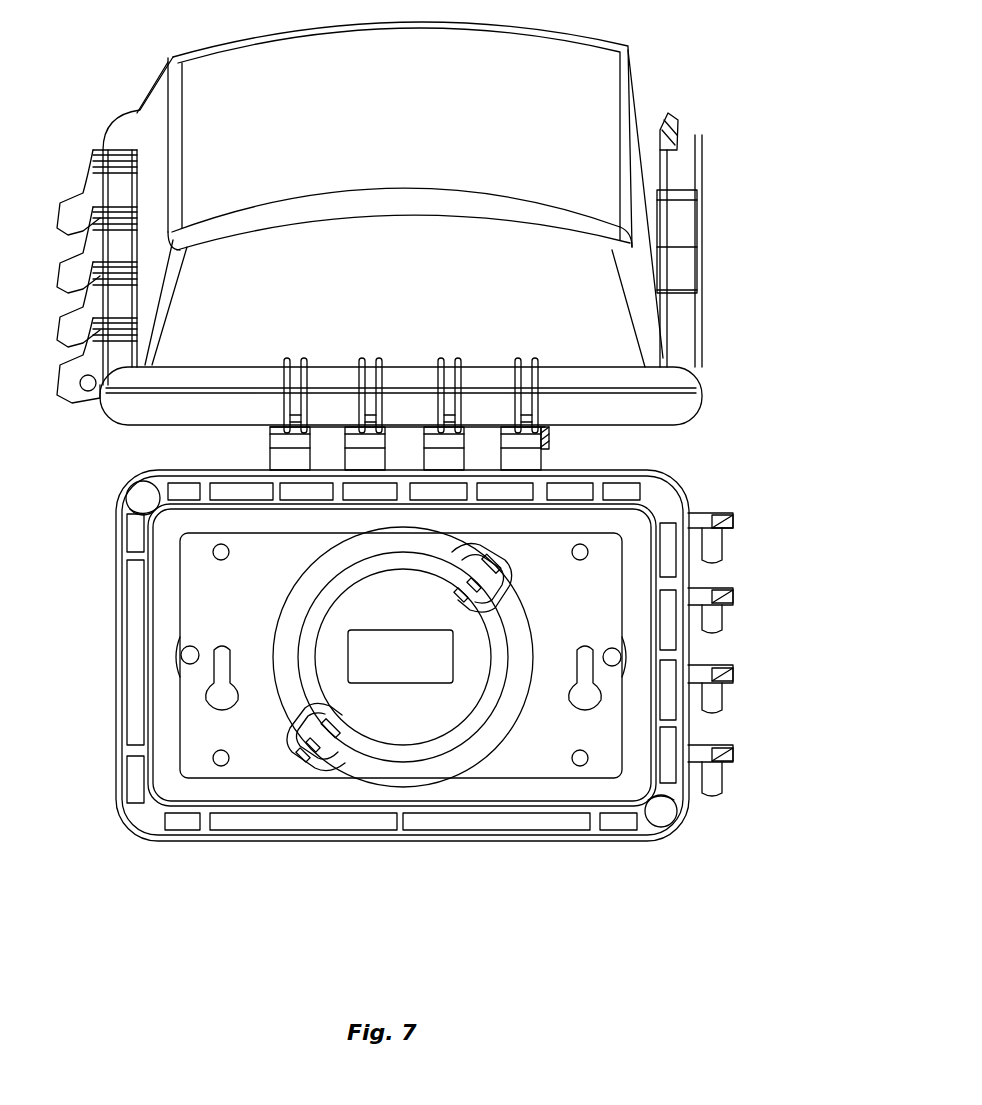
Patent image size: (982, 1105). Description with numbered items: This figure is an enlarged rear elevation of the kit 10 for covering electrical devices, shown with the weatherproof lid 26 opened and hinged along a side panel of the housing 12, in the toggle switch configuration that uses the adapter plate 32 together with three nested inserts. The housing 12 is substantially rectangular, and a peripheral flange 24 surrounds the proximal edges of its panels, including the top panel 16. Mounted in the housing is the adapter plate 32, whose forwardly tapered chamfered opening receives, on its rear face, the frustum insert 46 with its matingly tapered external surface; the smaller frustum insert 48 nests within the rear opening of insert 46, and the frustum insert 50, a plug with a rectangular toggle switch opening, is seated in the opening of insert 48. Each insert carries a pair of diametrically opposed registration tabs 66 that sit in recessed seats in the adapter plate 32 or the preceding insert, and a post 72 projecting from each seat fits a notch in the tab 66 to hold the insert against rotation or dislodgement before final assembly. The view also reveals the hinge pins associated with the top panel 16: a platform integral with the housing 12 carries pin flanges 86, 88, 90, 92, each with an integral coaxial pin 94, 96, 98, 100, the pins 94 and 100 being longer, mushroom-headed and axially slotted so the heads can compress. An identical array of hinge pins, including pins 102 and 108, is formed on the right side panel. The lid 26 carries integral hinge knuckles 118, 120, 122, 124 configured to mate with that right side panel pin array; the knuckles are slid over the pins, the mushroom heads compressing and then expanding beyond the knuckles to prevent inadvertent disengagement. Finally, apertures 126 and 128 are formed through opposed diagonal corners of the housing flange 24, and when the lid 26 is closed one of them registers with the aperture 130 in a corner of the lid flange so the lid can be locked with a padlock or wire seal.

The kit 10 is at (758, 364).
The housing 12 is at (171, 840).
The top panel 16 is at (653, 603).
The peripheral flange 24 is at (115, 658).
The weatherproof lid 26 is at (425, 126).
The adapter plate 32 is at (200, 740).
The frustum insert 46 is at (483, 733).
The frustum insert 48 is at (440, 737).
The frustum insert 50 is at (387, 724).
The registration tabs 66 is at (490, 602).
The post 72 is at (457, 592).
The pin flange 86 is at (733, 516).
The pin flange 88 is at (730, 598).
The pin flange 90 is at (730, 681).
The pin flange 92 is at (730, 757).
The hinge pin 94 is at (708, 542).
The hinge pin 96 is at (718, 618).
The hinge pin 98 is at (718, 696).
The hinge pin 100 is at (718, 779).
The hinge pin 102 is at (550, 445).
The hinge pin 108 is at (313, 453).
The hinge knuckle 118 is at (530, 455).
The hinge knuckle 120 is at (455, 455).
The hinge knuckle 122 is at (383, 453).
The hinge knuckle 124 is at (293, 455).
The aperture 126 is at (138, 498).
The aperture 128 is at (662, 822).
The aperture 130 is at (673, 137).